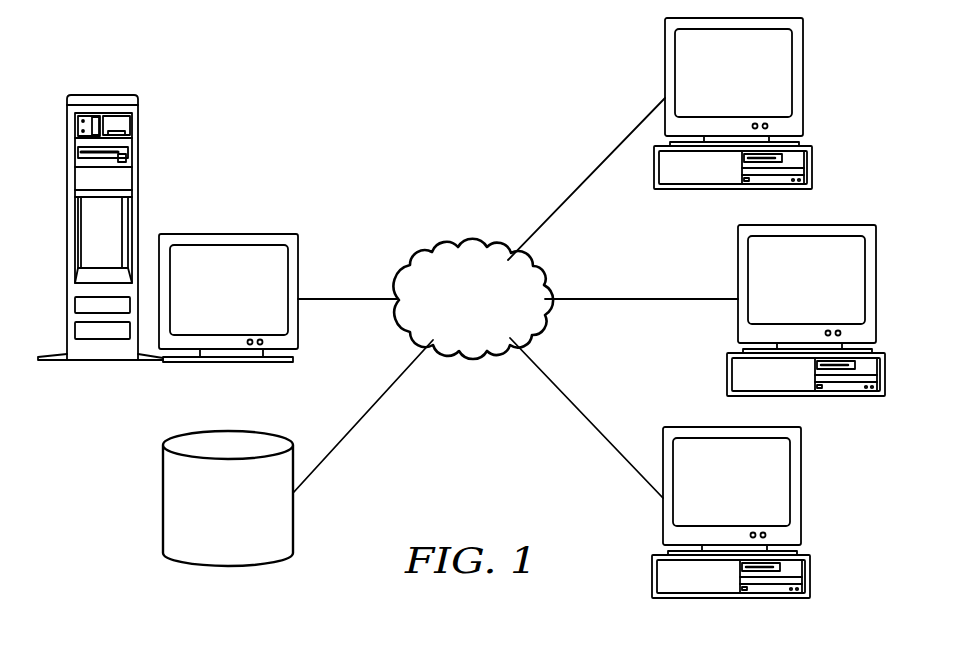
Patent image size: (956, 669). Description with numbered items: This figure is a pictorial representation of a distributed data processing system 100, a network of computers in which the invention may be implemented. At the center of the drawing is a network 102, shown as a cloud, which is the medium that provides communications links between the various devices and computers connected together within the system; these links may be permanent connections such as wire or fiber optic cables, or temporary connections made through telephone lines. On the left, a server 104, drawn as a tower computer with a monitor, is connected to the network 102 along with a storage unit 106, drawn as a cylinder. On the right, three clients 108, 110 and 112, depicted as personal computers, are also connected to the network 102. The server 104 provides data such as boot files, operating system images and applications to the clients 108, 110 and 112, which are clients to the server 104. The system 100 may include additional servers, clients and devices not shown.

The distributed data processing system 100 is at (340, 98).
The network 102 is at (491, 310).
The server 104 is at (249, 297).
The storage unit 106 is at (249, 519).
The client 108 is at (753, 90).
The client 110 is at (827, 293).
The client 112 is at (753, 498).